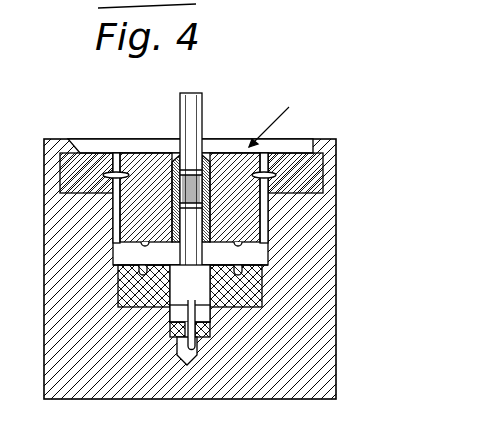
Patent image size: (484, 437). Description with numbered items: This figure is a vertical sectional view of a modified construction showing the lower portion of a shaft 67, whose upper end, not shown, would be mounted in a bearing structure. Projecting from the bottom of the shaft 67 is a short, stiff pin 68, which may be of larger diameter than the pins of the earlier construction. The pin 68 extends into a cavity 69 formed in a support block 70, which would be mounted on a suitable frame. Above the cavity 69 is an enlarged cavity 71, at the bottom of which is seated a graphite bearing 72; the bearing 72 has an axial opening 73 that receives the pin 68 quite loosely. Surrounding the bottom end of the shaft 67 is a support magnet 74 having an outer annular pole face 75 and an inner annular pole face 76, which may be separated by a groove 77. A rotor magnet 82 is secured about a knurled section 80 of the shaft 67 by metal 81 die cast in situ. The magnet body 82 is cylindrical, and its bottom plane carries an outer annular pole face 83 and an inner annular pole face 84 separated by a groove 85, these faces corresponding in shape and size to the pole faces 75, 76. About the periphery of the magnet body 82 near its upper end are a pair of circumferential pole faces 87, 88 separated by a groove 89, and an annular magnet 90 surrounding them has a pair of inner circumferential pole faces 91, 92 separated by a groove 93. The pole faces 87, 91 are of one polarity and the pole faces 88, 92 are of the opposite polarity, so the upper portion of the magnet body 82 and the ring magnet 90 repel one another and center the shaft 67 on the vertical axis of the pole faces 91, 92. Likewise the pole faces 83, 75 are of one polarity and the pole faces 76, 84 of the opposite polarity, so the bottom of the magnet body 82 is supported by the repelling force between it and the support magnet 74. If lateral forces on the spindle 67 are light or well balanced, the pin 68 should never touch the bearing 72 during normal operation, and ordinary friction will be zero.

The shaft 67 is at (203, 113).
The pin 68 is at (200, 349).
The cavity 69 is at (189, 349).
The support block 70 is at (53, 233).
The enlarged cavity 71 is at (203, 315).
The graphite bearing 72 is at (170, 333).
The axial opening 73 is at (168, 370).
The support magnet 74 is at (250, 290).
The outer annular pole face 75 is at (268, 247).
The inner annular pole face 76 is at (233, 261).
The groove 77 is at (113, 260).
The knurled section 80 is at (222, 152).
The metal 81 is at (174, 157).
The rotor magnet 82 is at (263, 168).
The outer annular pole face 83 is at (262, 244).
The inner annular pole face 84 is at (151, 249).
The groove 85 is at (238, 238).
The circumferential pole face 87 is at (296, 152).
The circumferential pole face 88 is at (297, 208).
The groove 89 is at (249, 174).
The annular magnet 90 is at (82, 162).
The inner circumferential pole face 91 is at (115, 168).
The inner circumferential pole face 92 is at (115, 202).
The groove 93 is at (107, 173).